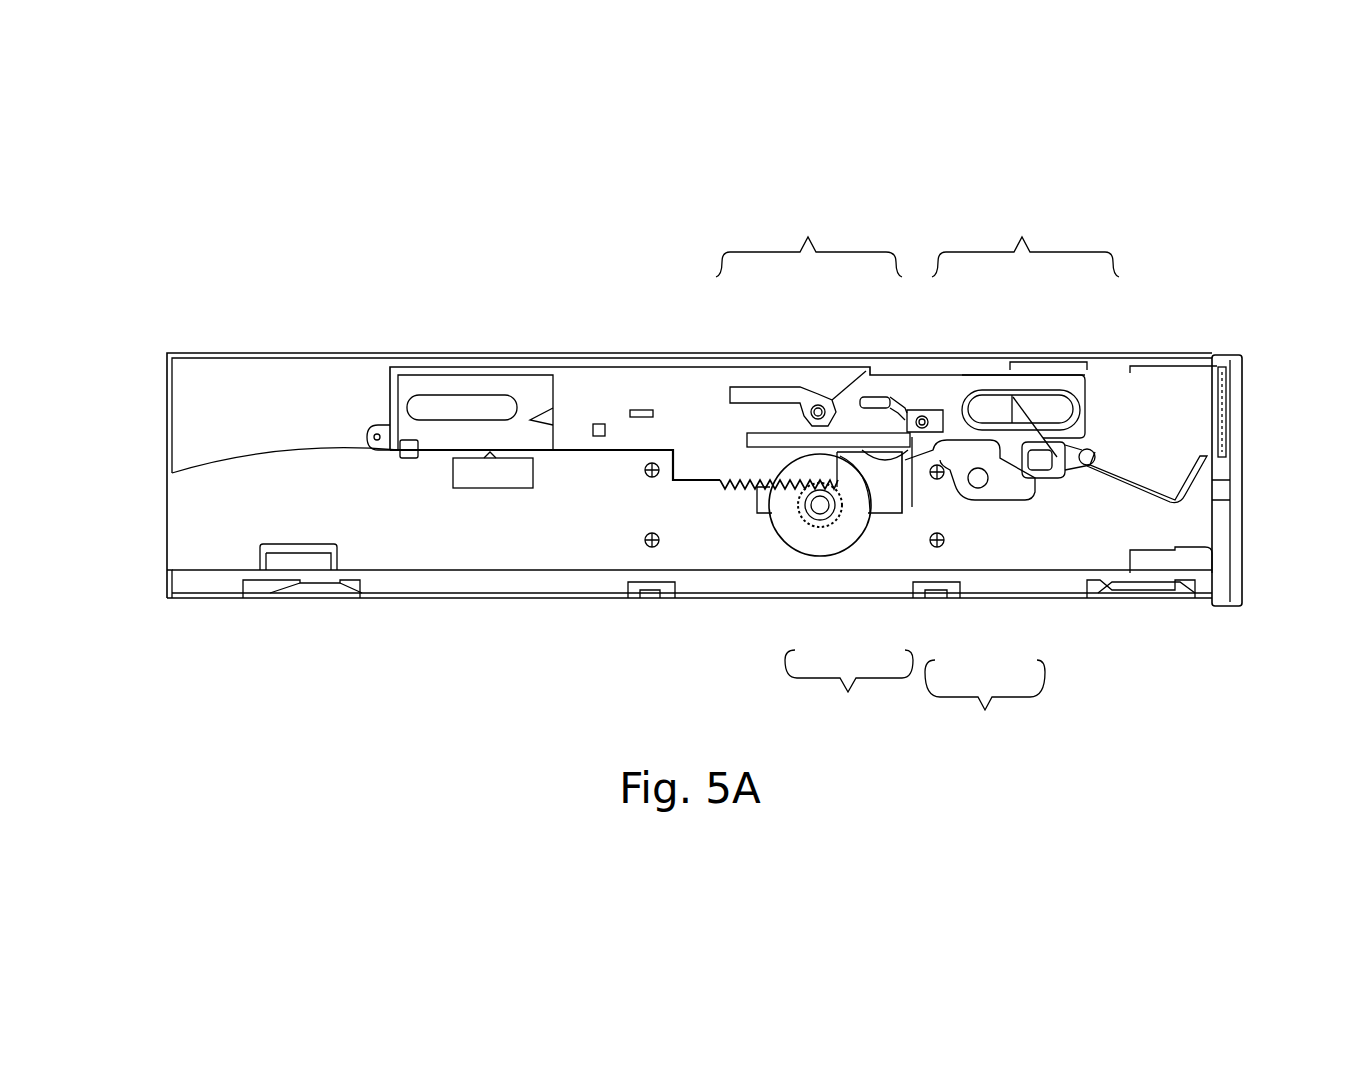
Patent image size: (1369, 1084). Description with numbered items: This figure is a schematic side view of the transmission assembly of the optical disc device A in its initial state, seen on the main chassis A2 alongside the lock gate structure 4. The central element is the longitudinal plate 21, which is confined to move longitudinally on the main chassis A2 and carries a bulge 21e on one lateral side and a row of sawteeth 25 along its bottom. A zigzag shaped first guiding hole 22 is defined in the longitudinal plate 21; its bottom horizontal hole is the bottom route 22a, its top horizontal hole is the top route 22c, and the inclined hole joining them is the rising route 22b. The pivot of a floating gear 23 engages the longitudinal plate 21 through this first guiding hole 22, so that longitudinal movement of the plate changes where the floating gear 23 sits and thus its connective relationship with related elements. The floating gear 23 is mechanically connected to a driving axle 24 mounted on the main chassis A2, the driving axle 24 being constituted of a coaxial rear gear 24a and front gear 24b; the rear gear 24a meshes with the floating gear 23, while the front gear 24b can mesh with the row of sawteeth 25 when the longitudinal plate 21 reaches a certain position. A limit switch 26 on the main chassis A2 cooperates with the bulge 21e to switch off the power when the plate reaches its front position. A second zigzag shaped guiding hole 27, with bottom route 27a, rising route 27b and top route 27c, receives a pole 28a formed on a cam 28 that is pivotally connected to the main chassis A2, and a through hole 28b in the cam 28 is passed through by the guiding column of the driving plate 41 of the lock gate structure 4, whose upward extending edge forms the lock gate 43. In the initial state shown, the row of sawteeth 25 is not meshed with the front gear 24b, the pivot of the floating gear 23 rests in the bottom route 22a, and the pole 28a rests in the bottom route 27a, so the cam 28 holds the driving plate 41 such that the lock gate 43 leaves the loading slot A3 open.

The optical disc device A is at (598, 340).
The main chassis A2 is at (167, 415).
The loading slot A3 is at (1237, 413).
The lock gate structure 4 is at (1147, 492).
The longitudinal plate 21 is at (387, 407).
The bulge 21e is at (387, 453).
The first guiding hole 22 is at (813, 323).
The bottom route 22a is at (828, 410).
The rising route 22b is at (819, 404).
The top route 22c is at (757, 392).
The floating gear 23 is at (878, 397).
The driving axle 24 is at (835, 590).
The rear gear 24a is at (823, 557).
The front gear 24b is at (840, 522).
The row of sawteeth 25 is at (740, 490).
The limit switch 26 is at (493, 488).
The second guiding hole 27 is at (1013, 328).
The bottom route 27a is at (962, 400).
The rising route 27b is at (935, 393).
The top route 27c is at (912, 407).
The cam 28 is at (985, 594).
The pole 28a is at (922, 437).
The through hole 28b is at (1057, 460).
The driving plate 41 is at (1067, 457).
The lock gate 43 is at (1217, 490).